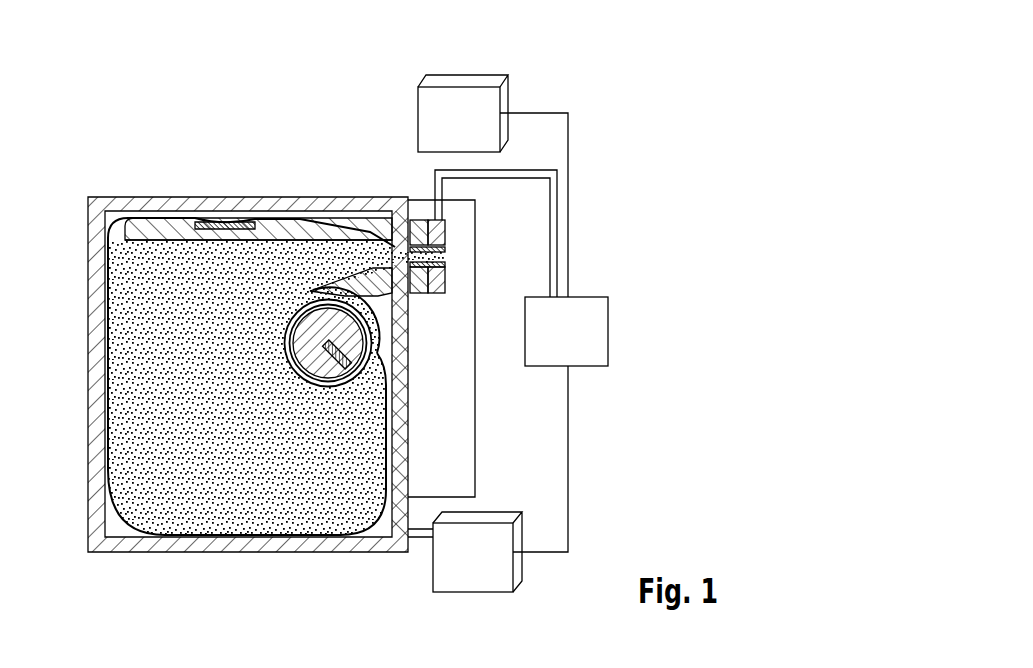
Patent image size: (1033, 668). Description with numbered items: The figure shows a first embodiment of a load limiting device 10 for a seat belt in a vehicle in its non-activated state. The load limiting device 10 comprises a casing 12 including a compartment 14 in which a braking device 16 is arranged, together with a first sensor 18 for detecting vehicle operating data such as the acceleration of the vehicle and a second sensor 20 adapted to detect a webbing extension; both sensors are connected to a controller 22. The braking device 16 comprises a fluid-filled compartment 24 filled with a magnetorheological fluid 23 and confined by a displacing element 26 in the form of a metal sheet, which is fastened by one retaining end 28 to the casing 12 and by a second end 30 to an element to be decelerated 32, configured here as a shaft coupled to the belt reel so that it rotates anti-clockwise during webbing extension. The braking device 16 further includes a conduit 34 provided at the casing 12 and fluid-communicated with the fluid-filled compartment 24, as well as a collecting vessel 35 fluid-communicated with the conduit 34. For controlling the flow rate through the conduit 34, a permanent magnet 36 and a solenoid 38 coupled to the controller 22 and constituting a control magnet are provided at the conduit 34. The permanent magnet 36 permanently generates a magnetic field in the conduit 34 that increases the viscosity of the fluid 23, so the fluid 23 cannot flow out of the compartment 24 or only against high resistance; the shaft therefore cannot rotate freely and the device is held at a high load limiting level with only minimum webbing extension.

The load limiting device 10 is at (552, 74).
The casing 12 is at (183, 184).
The compartment 14 is at (110, 224).
The braking device 16 is at (336, 183).
The first sensor 18 is at (465, 78).
The second sensor 20 is at (500, 514).
The controller 22 is at (612, 330).
The magnetorheological fluid 23 is at (276, 425).
The fluid-filled compartment 24 is at (174, 520).
The displacing element 26 is at (108, 498).
The retaining end 28 is at (232, 216).
The second end 30 is at (328, 387).
The element to be decelerated 32 is at (307, 380).
The conduit 34 is at (446, 256).
The collecting vessel 35 is at (477, 410).
The permanent magnet 36 is at (460, 226).
The solenoid 38 is at (445, 232).